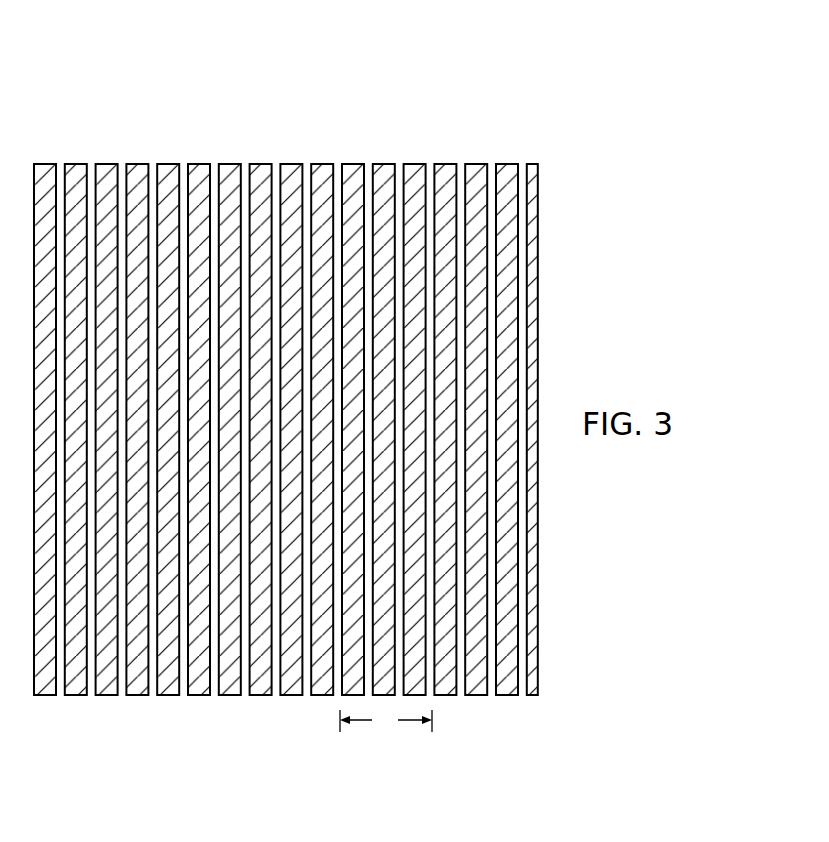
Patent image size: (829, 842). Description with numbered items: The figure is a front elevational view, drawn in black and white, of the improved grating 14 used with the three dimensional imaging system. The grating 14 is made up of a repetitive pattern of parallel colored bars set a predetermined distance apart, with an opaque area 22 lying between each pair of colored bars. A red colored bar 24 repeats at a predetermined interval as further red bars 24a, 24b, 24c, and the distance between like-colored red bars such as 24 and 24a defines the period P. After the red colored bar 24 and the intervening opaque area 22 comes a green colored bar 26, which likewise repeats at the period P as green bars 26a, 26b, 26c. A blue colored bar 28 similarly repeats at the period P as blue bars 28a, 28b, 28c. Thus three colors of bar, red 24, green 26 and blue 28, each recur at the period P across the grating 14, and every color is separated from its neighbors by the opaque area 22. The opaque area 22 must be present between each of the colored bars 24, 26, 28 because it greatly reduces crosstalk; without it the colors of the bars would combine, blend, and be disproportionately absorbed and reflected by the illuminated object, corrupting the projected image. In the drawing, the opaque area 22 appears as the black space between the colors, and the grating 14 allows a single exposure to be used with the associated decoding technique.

The grating 14 is at (556, 57).
The opaque area 22 is at (170, 696).
The red colored bar 24 is at (122, 162).
The red colored bar 24a is at (215, 162).
The red colored bar 24b is at (305, 162).
The red colored bar 24c is at (399, 162).
The green colored bar 26 is at (153, 162).
The green colored bar 26a is at (245, 162).
The green colored bar 26b is at (337, 162).
The green colored bar 26c is at (432, 162).
The blue colored bar 28 is at (186, 696).
The blue colored bar 28a is at (279, 696).
The blue colored bar 28b is at (371, 697).
The blue colored bar 28c is at (462, 696).
The period P is at (386, 721).